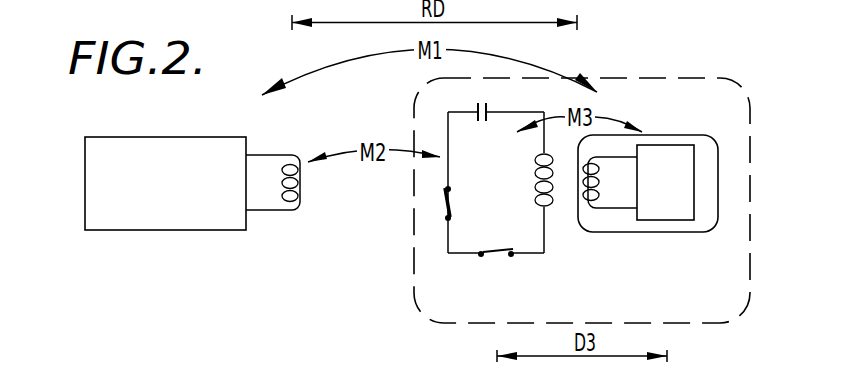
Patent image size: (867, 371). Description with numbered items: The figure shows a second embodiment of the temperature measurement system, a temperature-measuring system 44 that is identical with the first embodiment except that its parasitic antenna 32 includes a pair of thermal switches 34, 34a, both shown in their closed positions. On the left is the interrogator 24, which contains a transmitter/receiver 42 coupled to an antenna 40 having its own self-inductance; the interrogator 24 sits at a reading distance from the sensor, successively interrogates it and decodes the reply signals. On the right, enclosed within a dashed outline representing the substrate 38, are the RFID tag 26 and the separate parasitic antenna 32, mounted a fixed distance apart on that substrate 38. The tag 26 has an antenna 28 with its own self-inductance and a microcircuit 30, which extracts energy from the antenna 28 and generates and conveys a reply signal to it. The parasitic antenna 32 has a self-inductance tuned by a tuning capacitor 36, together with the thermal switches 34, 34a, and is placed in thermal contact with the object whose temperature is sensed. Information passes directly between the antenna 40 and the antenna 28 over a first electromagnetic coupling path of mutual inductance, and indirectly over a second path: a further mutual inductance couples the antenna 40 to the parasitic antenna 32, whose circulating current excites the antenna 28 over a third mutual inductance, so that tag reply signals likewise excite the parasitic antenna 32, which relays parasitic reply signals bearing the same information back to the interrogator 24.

The interrogator 24 is at (132, 180).
The transmitter/receiver 42 is at (155, 229).
The antenna 40 is at (295, 211).
The temperature-measuring system 44 is at (715, 60).
The substrate 38 is at (749, 205).
The parasitic antenna 32 is at (457, 188).
The tuning capacitor 36 is at (477, 107).
The thermal switch 34a is at (444, 201).
The thermal switch 34 is at (495, 258).
The RFID tag 26 is at (684, 187).
The microcircuit 30 is at (663, 145).
The antenna 28 is at (612, 212).